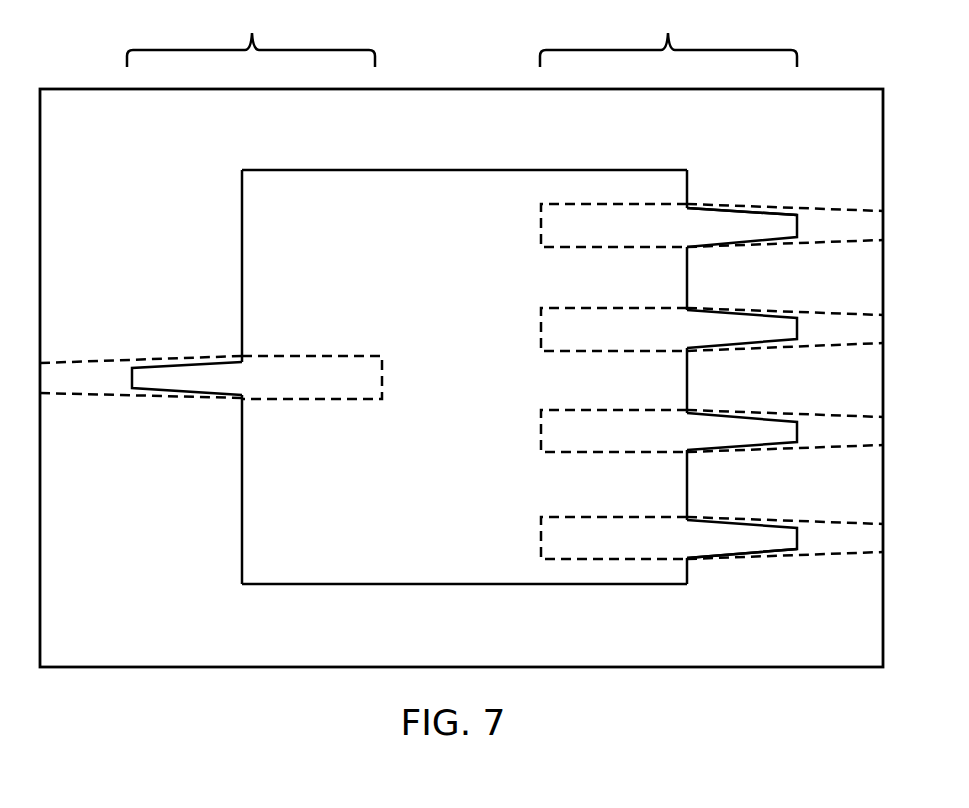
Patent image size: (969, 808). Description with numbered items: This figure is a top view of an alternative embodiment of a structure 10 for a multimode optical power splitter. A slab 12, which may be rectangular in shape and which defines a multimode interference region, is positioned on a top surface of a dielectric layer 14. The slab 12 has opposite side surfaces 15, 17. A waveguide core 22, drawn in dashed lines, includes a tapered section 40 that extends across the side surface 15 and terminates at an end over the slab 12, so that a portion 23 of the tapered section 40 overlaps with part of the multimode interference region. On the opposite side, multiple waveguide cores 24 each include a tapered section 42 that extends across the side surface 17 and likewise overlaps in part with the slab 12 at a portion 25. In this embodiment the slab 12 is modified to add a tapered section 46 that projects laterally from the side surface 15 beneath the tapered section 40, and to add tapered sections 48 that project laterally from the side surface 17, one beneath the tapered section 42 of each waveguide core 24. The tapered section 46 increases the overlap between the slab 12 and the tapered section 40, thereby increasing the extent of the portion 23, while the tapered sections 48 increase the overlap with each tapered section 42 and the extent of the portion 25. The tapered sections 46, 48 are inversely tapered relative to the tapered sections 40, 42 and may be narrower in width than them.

The structure 10 is at (212, 158).
The slab 12 is at (450, 540).
The dielectric layer 14 is at (110, 628).
The side surface 15 is at (242, 483).
The side surface 17 is at (687, 485).
The waveguide core 22 is at (107, 354).
The portion 23 is at (251, 35).
The waveguide cores 24 is at (706, 200).
The portion 25 is at (668, 35).
The tapered section 40 is at (332, 385).
The tapered section 42 is at (607, 222).
The tapered section 46 is at (182, 377).
The tapered sections 48 is at (745, 223).